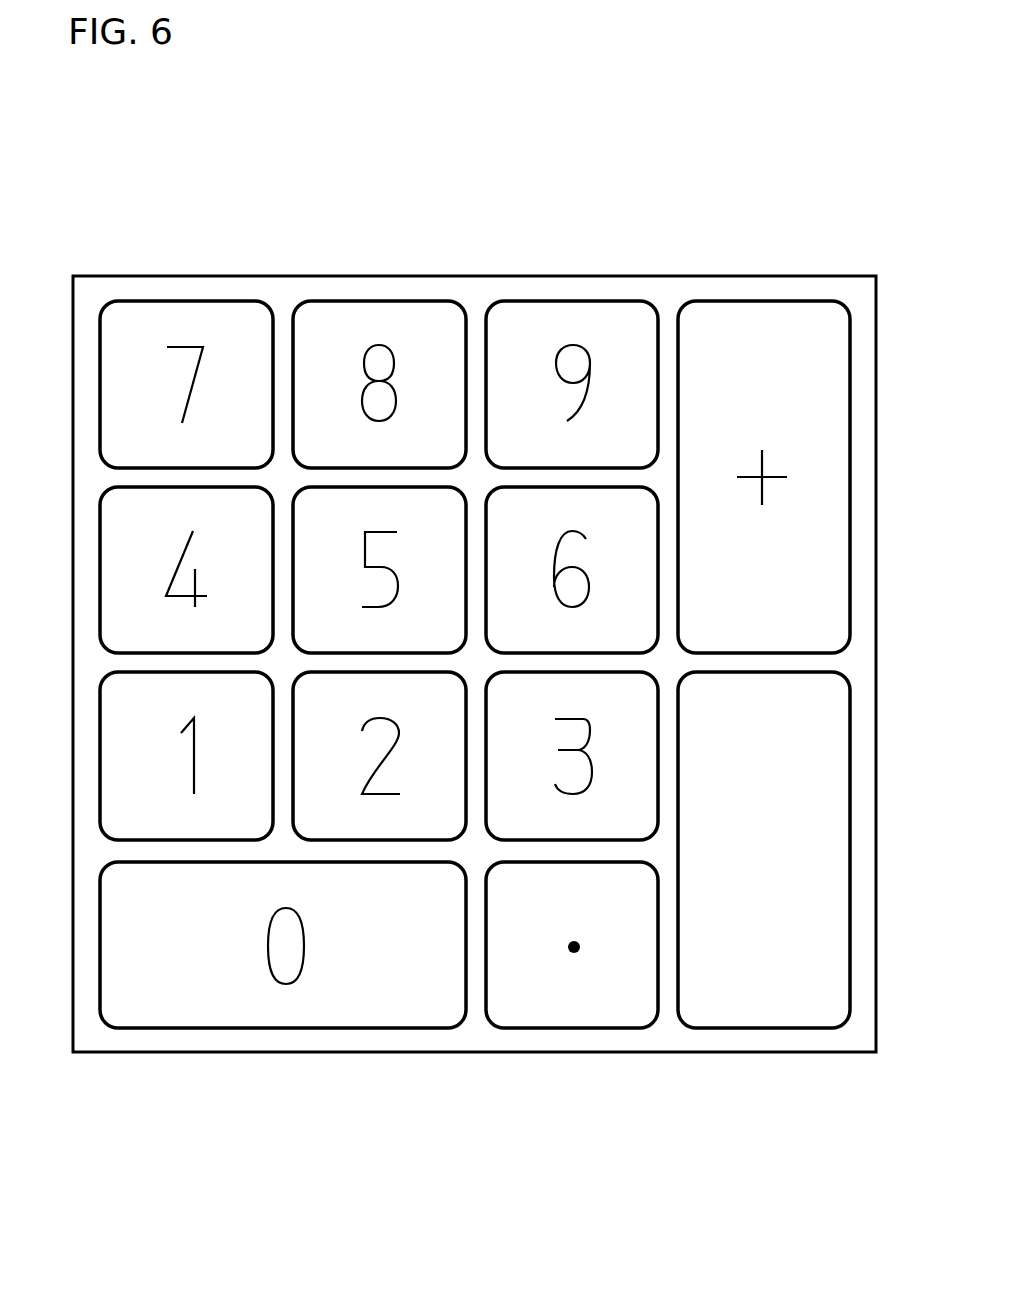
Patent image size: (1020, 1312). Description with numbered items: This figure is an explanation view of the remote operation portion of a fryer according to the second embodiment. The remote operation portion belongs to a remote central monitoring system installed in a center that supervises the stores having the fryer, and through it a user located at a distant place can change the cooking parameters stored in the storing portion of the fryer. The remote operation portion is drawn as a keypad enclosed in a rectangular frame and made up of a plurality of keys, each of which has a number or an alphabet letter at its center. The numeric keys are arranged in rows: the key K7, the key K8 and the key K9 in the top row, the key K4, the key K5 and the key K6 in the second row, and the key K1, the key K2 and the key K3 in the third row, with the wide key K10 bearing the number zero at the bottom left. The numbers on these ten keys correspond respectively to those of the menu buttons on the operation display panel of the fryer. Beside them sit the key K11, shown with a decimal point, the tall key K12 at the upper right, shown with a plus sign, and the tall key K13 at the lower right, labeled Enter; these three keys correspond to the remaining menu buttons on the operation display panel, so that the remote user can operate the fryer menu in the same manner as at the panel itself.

The key K1 is at (121, 826).
The key K2 is at (392, 822).
The key K3 is at (612, 797).
The key K4 is at (143, 520).
The key K5 is at (329, 512).
The key K6 is at (520, 512).
The key K7 is at (182, 311).
The key K8 is at (388, 300).
The key K9 is at (566, 300).
The key K10 is at (205, 1005).
The key K11 is at (545, 990).
The key K12 is at (760, 300).
The key K13 is at (803, 1005).